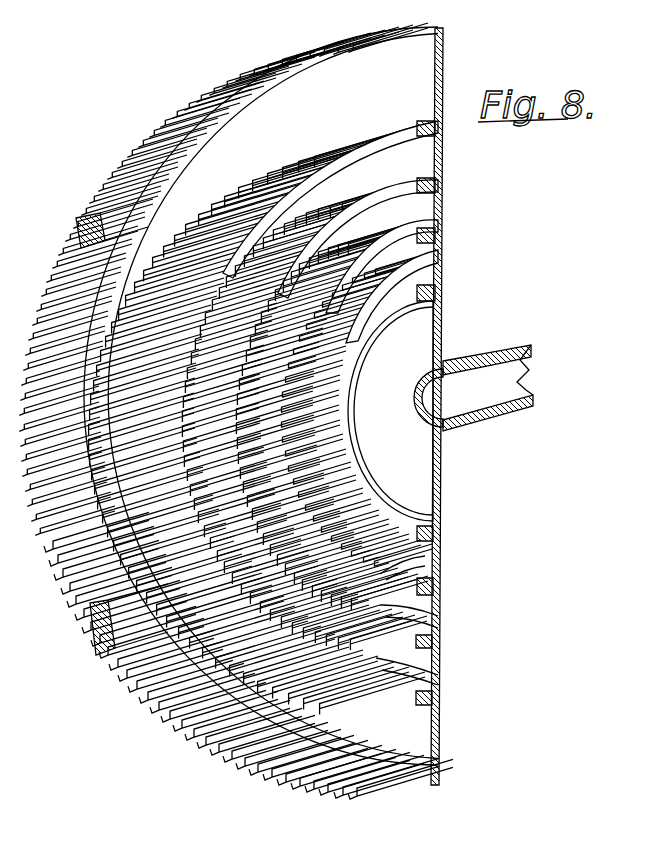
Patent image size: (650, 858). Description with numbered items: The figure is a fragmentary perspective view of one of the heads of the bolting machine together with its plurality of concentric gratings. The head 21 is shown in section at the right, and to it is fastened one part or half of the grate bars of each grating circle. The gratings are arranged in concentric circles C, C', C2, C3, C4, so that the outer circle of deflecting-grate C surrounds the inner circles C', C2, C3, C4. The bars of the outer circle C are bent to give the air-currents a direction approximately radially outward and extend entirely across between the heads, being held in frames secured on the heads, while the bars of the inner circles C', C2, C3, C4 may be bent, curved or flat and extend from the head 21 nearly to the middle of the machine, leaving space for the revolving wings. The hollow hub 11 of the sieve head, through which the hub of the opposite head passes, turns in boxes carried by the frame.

The head 21 is at (436, 72).
The hollow hub 11 is at (493, 331).
The outer circle of deflecting-grate C is at (236, 419).
The inner circle of gratings C' is at (263, 418).
The inner circle of gratings C2 is at (350, 190).
The inner circle of gratings C3 is at (372, 234).
The inner circle of gratings C4 is at (374, 284).